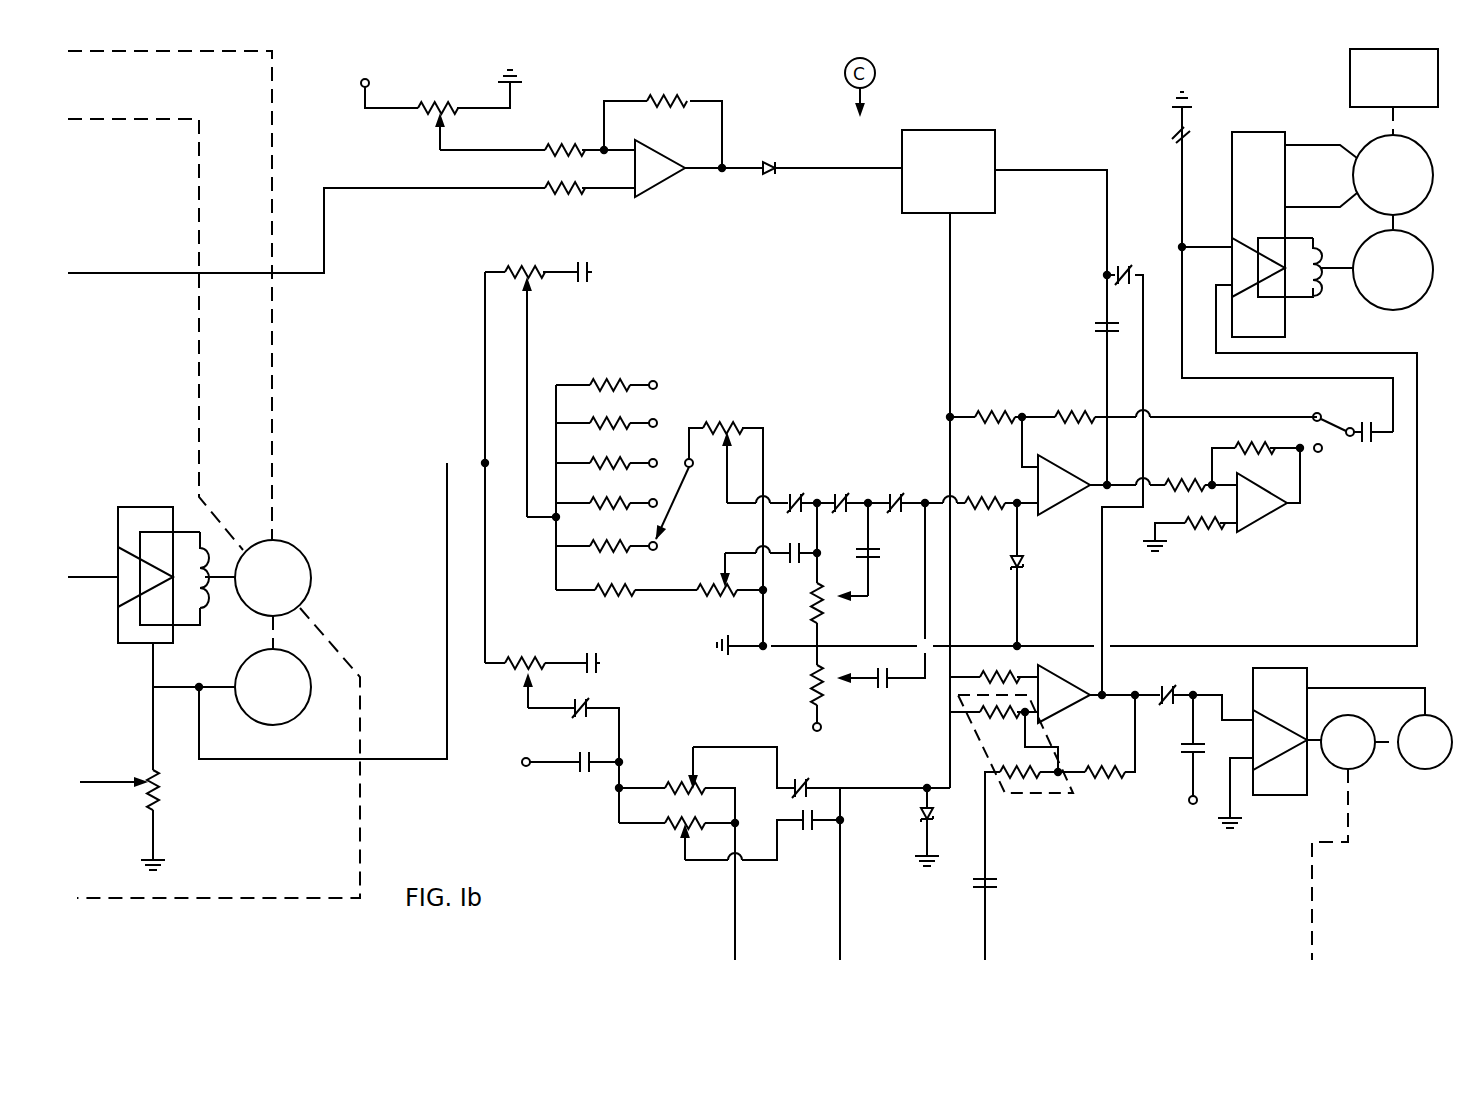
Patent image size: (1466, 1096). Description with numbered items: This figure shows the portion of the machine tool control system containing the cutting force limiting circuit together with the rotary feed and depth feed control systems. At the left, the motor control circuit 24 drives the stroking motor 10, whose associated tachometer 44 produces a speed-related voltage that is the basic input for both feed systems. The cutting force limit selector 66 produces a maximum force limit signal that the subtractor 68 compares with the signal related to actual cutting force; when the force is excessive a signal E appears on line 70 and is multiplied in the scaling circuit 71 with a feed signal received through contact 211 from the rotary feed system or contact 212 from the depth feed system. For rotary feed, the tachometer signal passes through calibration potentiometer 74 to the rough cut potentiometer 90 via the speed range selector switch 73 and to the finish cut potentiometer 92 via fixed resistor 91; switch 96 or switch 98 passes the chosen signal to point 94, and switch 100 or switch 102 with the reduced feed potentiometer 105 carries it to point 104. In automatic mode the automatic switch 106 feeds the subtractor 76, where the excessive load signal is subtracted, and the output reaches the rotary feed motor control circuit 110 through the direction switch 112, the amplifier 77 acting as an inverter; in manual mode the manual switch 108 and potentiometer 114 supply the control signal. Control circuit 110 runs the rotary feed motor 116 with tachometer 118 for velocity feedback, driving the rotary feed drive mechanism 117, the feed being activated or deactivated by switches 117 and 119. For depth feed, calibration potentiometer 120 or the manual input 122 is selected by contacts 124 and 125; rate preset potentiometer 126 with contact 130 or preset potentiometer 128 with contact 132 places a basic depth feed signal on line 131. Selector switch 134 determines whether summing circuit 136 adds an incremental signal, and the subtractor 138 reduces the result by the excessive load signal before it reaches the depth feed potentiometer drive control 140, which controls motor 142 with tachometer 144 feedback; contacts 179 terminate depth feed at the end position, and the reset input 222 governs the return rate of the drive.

The stroking motor 10 is at (273, 578).
The motor control circuit 24 is at (140, 507).
The tachometer 44 is at (273, 687).
The cutting force limit selector 66 is at (437, 100).
The subtractor 68 is at (601, 147).
The line 70 is at (808, 174).
The scaling circuit 71 is at (948, 171).
The speed range selector switch 73 is at (665, 436).
The calibration potentiometer 74 is at (518, 265).
The subtractor 76 is at (1121, 529).
The amplifier 77 is at (1232, 496).
The rough cut potentiometer 90 is at (727, 428).
The fixed resistor 91 is at (612, 586).
The finish cut potentiometer 92 is at (708, 590).
The point 94 is at (824, 502).
The switch 96 is at (792, 500).
The switch 98 is at (794, 558).
The switch 100 is at (842, 490).
The switch 102 is at (874, 560).
The point 104 is at (910, 498).
The reduced feed potentiometer 105 is at (812, 606).
The automatic switch 106 is at (906, 520).
The manual switch 108 is at (890, 684).
The rotary feed motor control circuit 110 is at (1254, 132).
The switch 112 is at (1324, 428).
The potentiometer 114 is at (803, 674).
The rotary feed motor 116 is at (1393, 175).
The rotary feed drive mechanism 117 is at (1347, 76).
The tachometer 118 is at (1393, 270).
The switch 119 is at (1372, 450).
The calibration potentiometer 120 is at (515, 682).
The manual input 122 is at (522, 772).
The selector contact 124 is at (606, 666).
The selector contact 125 is at (582, 776).
The rate preset potentiometer 126 is at (684, 784).
The preset potentiometer 128 is at (677, 846).
The contact 130 is at (810, 790).
The line 131 is at (862, 796).
The contact 132 is at (812, 834).
The selector switch 134 is at (996, 888).
The summing circuit 136 is at (1048, 796).
The subtractor 138 is at (1101, 812).
The depth feed potentiometer drive control 140 is at (1339, 731).
The motor 142 is at (1348, 742).
The tachometer 144 is at (1425, 742).
The contacts 179 is at (1166, 692).
The contact 211 is at (1097, 332).
The contact 212 is at (1123, 266).
The reset input 222 is at (1184, 750).